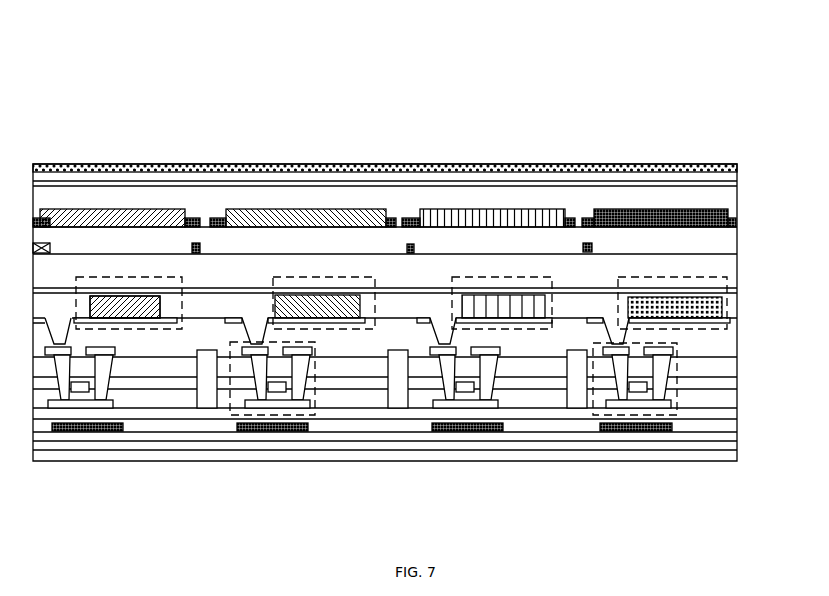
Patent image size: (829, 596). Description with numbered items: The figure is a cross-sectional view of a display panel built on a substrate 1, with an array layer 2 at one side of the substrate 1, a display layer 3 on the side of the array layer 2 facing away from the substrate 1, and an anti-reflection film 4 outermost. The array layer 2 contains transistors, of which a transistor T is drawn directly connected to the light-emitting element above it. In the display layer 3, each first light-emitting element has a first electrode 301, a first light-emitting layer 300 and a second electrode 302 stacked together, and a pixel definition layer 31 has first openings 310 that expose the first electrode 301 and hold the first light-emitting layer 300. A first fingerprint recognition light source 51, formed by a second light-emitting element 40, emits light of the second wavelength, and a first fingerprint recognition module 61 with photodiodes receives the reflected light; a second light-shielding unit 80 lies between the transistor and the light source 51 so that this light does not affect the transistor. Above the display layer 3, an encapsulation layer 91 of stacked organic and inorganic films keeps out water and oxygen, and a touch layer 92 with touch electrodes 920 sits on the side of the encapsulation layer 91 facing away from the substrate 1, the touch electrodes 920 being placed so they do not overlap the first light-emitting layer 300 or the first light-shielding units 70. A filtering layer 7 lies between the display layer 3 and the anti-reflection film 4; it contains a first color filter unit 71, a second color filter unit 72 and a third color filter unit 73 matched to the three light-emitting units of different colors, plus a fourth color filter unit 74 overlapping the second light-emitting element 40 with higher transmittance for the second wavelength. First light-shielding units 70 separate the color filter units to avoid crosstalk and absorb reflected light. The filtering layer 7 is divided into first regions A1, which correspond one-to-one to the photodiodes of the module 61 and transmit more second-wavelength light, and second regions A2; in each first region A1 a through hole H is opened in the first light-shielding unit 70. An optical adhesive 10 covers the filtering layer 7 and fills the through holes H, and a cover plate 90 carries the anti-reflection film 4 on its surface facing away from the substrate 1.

The substrate 1 is at (723, 455).
The array layer 2 is at (407, 416).
The display layer 3 is at (401, 407).
The anti-reflection film 4 is at (738, 166).
The filtering layer 7 is at (401, 165).
The optical adhesive 10 is at (78, 193).
The pixel definition layer 31 is at (192, 308).
The second light-emitting element 40 is at (518, 328).
The first fingerprint recognition light source 51 is at (720, 448).
The first fingerprint recognition module 61 is at (207, 400).
The first light-shielding unit 70 is at (187, 223).
The first color filter unit 71 is at (122, 215).
The second color filter unit 72 is at (292, 215).
The third color filter unit 73 is at (667, 222).
The fourth color filter unit 74 is at (478, 218).
The second light-shielding unit 80 is at (273, 431).
The cover plate 90 is at (727, 178).
The encapsulation layer 91 is at (718, 260).
The touch layer 92 is at (407, 194).
The touch electrode 920 is at (592, 247).
The first light-emitting layer 300 is at (106, 395).
The first opening 310 is at (90, 300).
The first electrode 301 is at (143, 297).
The second electrode 302 is at (55, 288).
The transistor T is at (313, 415).
The through hole H is at (197, 225).
The first region A1 is at (581, 232).
The second region A2 is at (737, 164).